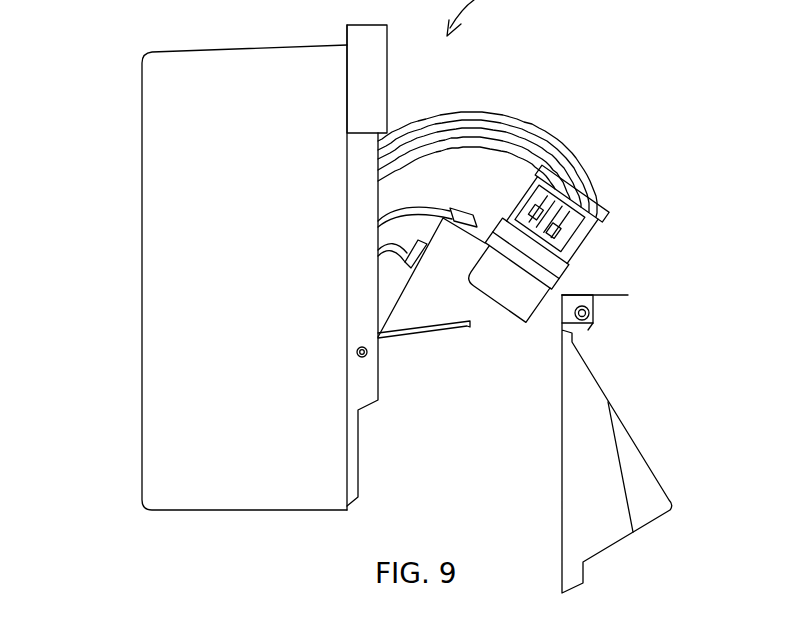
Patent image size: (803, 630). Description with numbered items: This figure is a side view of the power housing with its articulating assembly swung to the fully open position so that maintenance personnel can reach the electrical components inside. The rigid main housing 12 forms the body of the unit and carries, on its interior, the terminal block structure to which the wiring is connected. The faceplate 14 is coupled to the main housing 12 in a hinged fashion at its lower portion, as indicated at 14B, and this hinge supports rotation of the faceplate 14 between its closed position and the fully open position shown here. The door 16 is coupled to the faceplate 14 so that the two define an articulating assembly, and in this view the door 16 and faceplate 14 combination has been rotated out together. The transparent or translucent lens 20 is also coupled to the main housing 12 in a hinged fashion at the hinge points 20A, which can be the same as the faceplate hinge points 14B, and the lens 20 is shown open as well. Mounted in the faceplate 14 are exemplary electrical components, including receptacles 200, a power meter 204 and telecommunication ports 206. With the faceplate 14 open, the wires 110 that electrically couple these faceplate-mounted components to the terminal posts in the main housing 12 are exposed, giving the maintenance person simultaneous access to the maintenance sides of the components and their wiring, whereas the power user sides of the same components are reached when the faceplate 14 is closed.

The main housing 12 is at (247, 47).
The faceplate 14 is at (453, 239).
The hinge 14B is at (363, 358).
The door 16 is at (575, 490).
The lens 20 is at (420, 340).
The hinge points 20A is at (357, 352).
The wires 110 is at (521, 112).
The receptacles 200 is at (516, 318).
The power meter 204 is at (466, 214).
The telecommunication ports 206 is at (410, 262).